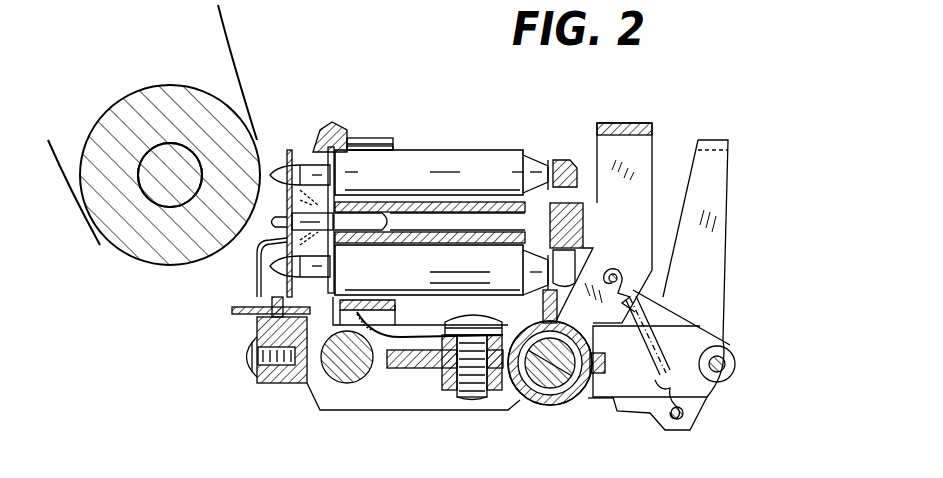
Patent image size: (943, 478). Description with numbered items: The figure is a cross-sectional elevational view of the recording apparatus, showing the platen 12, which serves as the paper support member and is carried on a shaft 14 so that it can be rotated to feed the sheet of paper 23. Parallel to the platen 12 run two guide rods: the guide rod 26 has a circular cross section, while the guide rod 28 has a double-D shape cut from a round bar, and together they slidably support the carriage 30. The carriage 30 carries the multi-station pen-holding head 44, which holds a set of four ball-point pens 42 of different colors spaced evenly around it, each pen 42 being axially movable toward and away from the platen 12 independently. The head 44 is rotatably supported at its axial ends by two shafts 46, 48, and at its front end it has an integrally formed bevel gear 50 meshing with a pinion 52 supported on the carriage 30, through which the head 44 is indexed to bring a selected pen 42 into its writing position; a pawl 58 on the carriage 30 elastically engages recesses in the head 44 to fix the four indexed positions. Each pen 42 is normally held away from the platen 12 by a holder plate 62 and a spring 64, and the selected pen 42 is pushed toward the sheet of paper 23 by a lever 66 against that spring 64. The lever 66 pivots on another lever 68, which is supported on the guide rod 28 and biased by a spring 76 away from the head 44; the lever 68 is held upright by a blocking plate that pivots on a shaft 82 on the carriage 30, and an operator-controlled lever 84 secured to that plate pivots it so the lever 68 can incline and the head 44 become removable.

The platen 12 is at (213, 115).
The shaft 14 is at (163, 197).
The sheet of paper 23 is at (238, 30).
The guide rod 26 is at (333, 380).
The guide rod 28 is at (540, 362).
The carriage 30 is at (428, 390).
The ball-point pens 42 is at (490, 151).
The multi-station pen-holding head 44 is at (395, 143).
The shaft 46 is at (537, 170).
The shaft 48 is at (352, 213).
The bevel gear 50 is at (356, 300).
The pinion 52 is at (234, 310).
The pawl 58 is at (382, 335).
The holder plate 62 is at (314, 127).
The spring 64 is at (303, 163).
The lever 66 is at (567, 160).
The lever 68 is at (643, 150).
The spring 76 is at (628, 318).
The shaft 82 is at (722, 358).
The operator-controlled lever 84 is at (725, 187).